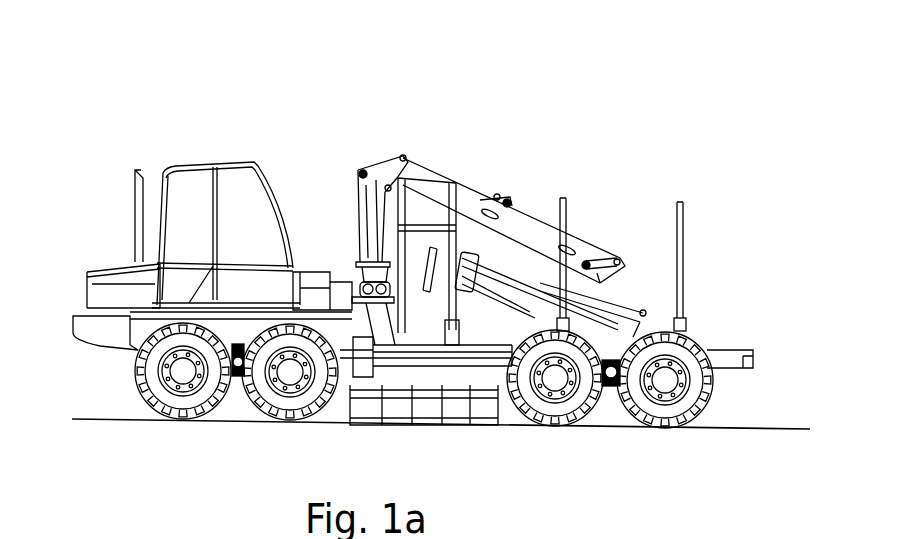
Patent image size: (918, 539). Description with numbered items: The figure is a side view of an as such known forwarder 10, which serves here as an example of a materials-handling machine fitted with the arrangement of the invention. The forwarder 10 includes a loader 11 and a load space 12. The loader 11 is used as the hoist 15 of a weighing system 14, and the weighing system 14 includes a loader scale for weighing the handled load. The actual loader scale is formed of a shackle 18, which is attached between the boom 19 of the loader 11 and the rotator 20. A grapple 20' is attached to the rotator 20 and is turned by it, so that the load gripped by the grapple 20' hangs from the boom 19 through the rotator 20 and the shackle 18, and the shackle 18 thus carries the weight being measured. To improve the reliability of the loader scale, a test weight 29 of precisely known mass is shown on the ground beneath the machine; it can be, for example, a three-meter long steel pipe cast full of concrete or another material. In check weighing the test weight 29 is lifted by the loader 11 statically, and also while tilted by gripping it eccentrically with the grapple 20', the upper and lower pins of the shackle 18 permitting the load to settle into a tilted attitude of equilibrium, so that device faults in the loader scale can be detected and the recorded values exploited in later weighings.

The forwarder 10 is at (200, 86).
The loader 11 is at (449, 178).
The load space 12 is at (573, 216).
The weighing system 14 is at (688, 43).
The hoist 15 is at (538, 166).
The shackle 18 is at (442, 252).
The boom 19 is at (492, 270).
The rotator 20 is at (357, 163).
The grapple 20' is at (324, 209).
The test weight 29 is at (455, 403).